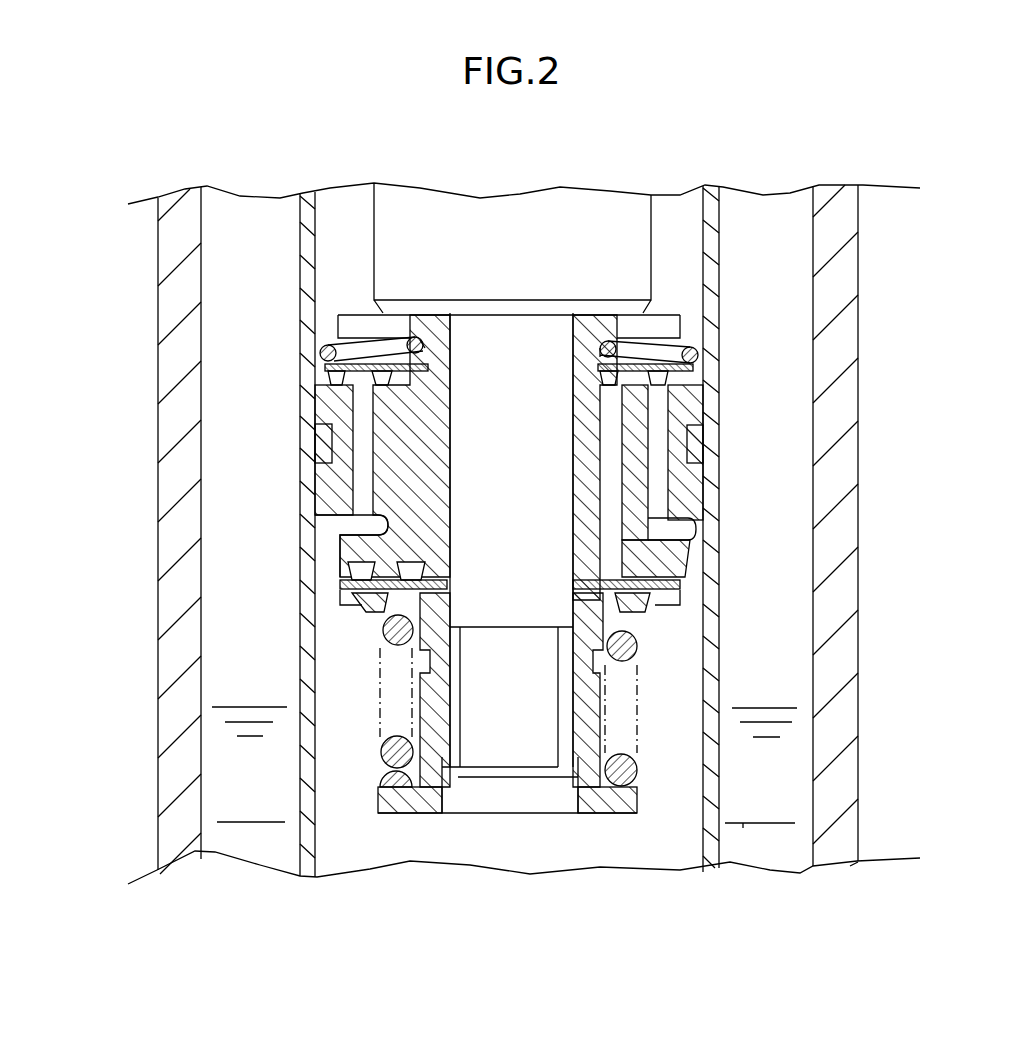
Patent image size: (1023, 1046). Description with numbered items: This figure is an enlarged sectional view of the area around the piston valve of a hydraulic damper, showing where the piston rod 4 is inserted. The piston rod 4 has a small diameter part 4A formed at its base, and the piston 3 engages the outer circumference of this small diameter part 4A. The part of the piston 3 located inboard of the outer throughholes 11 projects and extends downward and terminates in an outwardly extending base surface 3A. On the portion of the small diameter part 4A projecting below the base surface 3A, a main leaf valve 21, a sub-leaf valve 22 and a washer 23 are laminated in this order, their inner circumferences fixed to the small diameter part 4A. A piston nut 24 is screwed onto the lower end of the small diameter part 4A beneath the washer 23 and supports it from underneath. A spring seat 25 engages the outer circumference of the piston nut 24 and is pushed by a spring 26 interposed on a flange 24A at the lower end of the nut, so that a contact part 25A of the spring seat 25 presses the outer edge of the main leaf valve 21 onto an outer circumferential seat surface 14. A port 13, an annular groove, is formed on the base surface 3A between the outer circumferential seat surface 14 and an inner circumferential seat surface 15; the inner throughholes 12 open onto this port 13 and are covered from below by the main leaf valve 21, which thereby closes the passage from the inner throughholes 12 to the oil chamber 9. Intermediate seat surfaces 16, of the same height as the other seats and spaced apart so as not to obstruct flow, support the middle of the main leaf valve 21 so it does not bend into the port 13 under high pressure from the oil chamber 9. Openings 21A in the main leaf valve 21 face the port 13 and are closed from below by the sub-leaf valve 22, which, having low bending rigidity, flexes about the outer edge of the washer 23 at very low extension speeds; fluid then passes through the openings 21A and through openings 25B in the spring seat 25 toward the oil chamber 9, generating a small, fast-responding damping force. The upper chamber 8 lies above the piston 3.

The piston 3 is at (402, 531).
The base surface 3A is at (244, 722).
The piston rod 4 is at (370, 247).
The small diameter part 4A is at (329, 471).
The upper chamber 8 is at (213, 311).
The oil chamber 9 is at (248, 794).
The outer throughholes 11 is at (622, 447).
The inner throughholes 12 is at (765, 474).
The port 13 is at (517, 466).
The outer circumferential seat surface 14 is at (261, 578).
The inner circumferential seat surface 15 is at (266, 690).
The intermediate seat surfaces 16 is at (239, 616).
The main leaf valve 21 is at (754, 457).
The openings 21A is at (793, 451).
The sub-leaf valve 22 is at (759, 587).
The washer 23 is at (783, 630).
The piston nut 24 is at (656, 807).
The flange 24A is at (816, 765).
The spring seat 25 is at (787, 697).
The contact part 25A is at (805, 605).
The openings 25B is at (238, 676).
The spring 26 is at (752, 690).